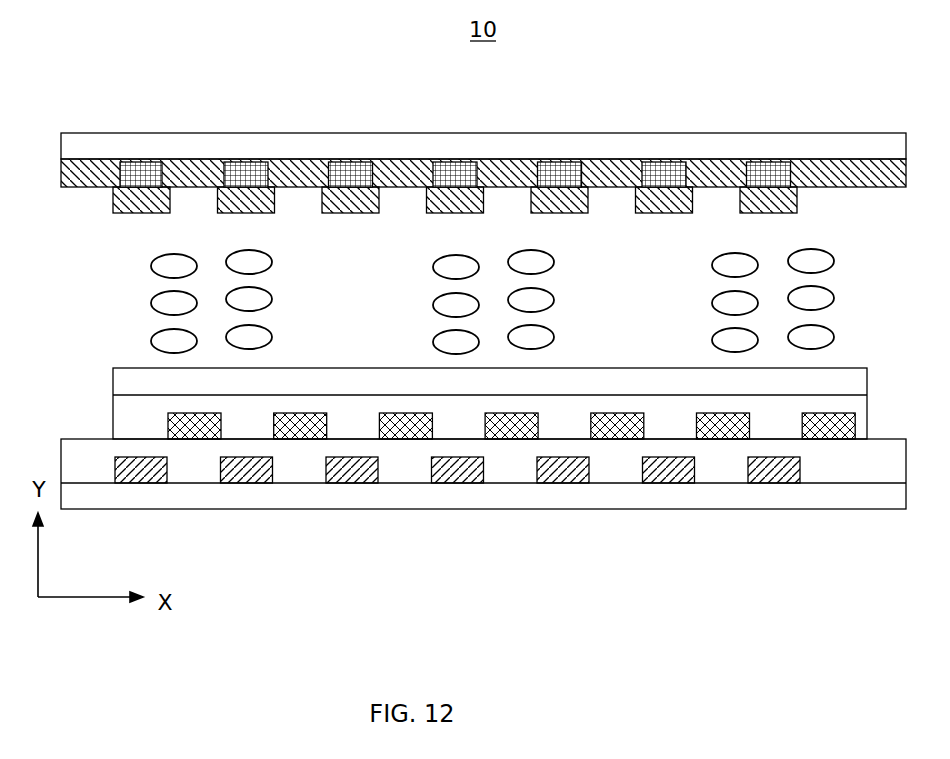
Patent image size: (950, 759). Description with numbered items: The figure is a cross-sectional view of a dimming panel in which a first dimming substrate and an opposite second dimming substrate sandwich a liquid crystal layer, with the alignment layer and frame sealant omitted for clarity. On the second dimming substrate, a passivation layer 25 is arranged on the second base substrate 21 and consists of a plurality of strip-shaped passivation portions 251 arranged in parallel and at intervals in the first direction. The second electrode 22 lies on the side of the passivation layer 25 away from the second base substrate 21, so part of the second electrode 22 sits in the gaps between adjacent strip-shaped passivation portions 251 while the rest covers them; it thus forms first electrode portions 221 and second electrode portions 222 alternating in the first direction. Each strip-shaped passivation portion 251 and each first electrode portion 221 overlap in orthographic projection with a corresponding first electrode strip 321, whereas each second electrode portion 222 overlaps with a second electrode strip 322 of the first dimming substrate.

The second base substrate 21 is at (70, 152).
The second electrode 22 is at (467, 171).
The first electrode portion 221 is at (220, 198).
The second electrode portion 222 is at (301, 177).
The passivation layer 25 is at (399, 144).
The strip-shaped passivation portion 251 is at (452, 172).
The first electrode strip 321 is at (147, 478).
The second electrode strip 322 is at (305, 430).